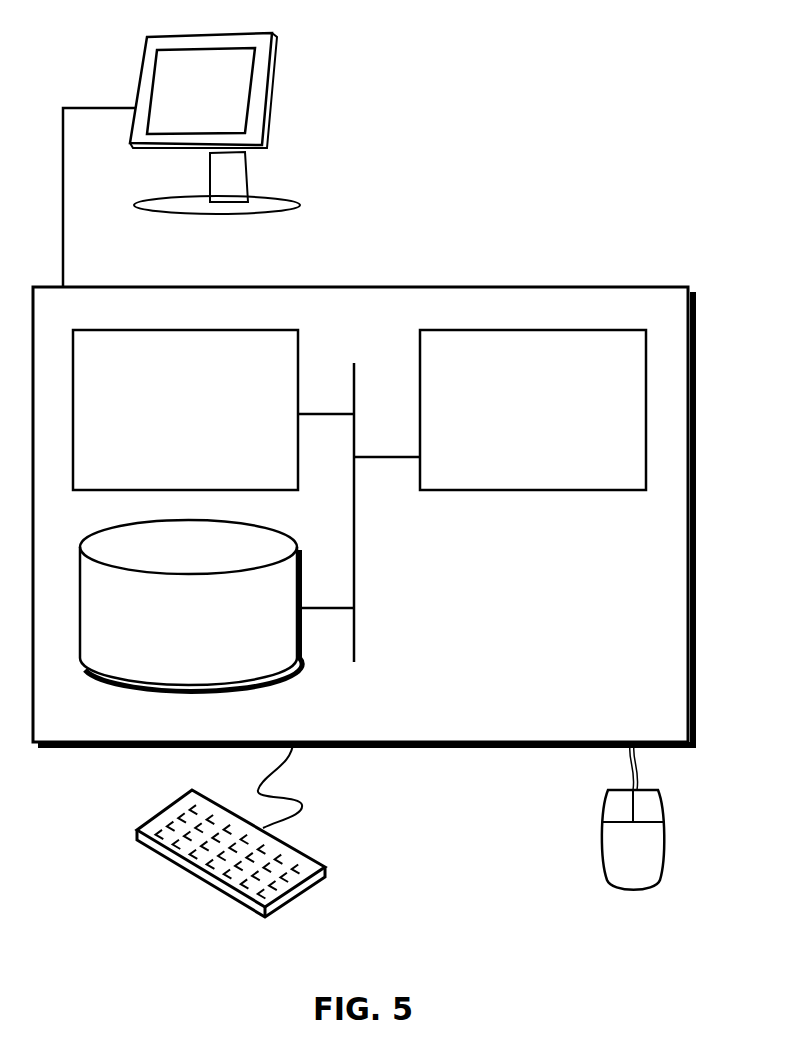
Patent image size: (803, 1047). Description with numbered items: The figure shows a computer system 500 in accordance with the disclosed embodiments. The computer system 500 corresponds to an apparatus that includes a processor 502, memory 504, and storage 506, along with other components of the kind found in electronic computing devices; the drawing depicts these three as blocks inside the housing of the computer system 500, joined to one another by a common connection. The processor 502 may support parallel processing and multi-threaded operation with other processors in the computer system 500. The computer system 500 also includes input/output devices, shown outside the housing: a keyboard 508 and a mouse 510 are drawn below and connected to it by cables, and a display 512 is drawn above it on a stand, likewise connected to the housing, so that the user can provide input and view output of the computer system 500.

The computer system 500 is at (408, 265).
The processor 502 is at (515, 421).
The memory 504 is at (165, 421).
The storage 506 is at (172, 634).
The keyboard 508 is at (155, 848).
The mouse 510 is at (612, 863).
The display 512 is at (181, 160).